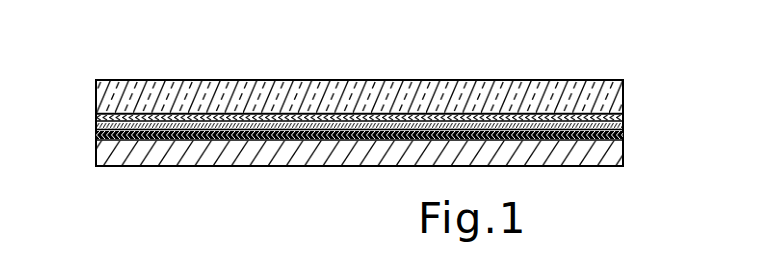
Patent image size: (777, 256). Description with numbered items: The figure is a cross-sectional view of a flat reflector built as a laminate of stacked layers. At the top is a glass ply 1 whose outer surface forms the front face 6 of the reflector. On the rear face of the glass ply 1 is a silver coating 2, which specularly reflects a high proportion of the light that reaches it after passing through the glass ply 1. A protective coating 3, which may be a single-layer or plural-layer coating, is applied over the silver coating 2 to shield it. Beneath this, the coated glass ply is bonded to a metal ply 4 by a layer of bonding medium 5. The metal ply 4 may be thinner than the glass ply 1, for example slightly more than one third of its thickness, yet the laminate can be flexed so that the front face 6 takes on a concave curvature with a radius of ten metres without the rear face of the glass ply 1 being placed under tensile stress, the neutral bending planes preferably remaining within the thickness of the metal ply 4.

The glass ply 1 is at (185, 98).
The silver coating 2 is at (97, 113).
The protective coating 3 is at (100, 125).
The metal ply 4 is at (205, 157).
The layer of bonding medium 5 is at (98, 143).
The front face 6 is at (477, 79).